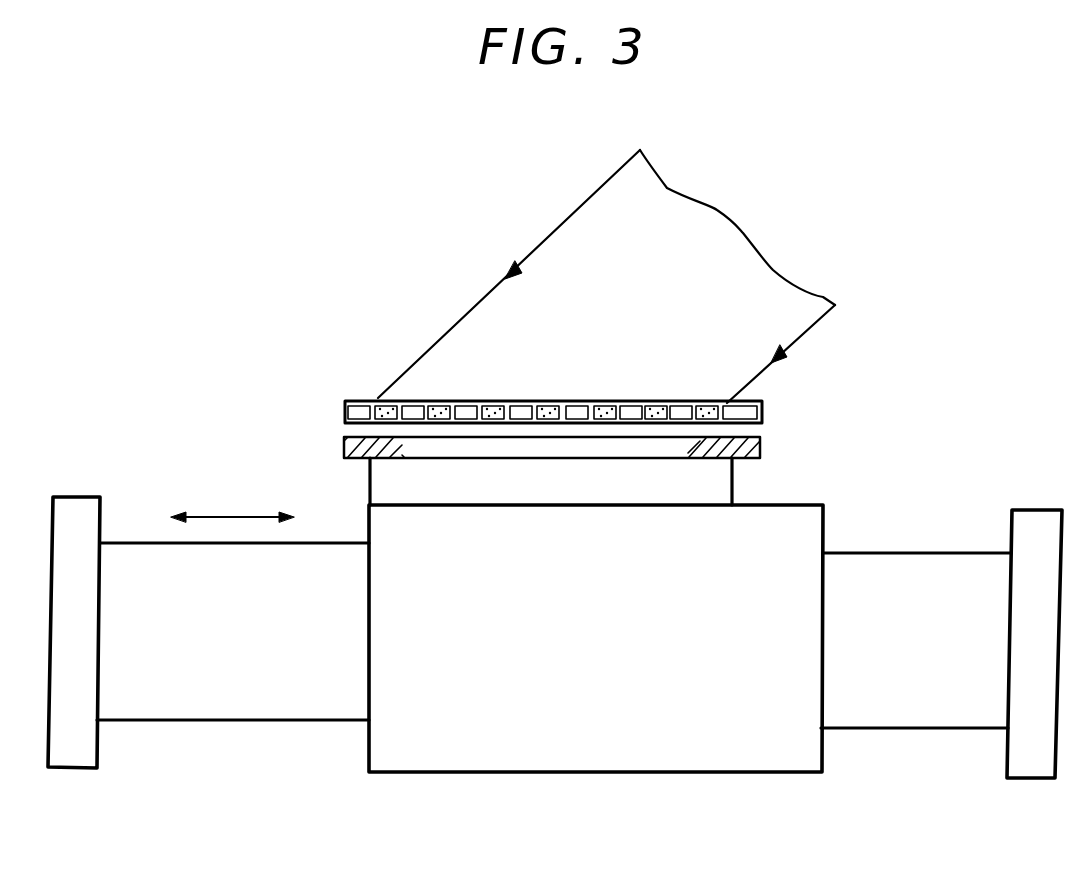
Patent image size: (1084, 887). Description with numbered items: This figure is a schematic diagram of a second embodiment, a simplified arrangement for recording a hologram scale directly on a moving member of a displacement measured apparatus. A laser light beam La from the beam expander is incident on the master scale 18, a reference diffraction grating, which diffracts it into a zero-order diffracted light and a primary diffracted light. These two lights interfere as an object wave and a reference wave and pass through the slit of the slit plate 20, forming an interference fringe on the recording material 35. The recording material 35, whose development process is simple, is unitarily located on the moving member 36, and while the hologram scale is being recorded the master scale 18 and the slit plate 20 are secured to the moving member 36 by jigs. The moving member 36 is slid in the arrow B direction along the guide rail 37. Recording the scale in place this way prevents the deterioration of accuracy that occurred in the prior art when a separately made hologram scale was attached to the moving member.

The laser light beam La is at (552, 232).
The master scale 18 is at (763, 413).
The slit plate 20 is at (343, 451).
The recording material 35 is at (718, 488).
The moving member 36 is at (709, 766).
The guide rail 37 is at (210, 709).
The arrow B direction B is at (230, 514).